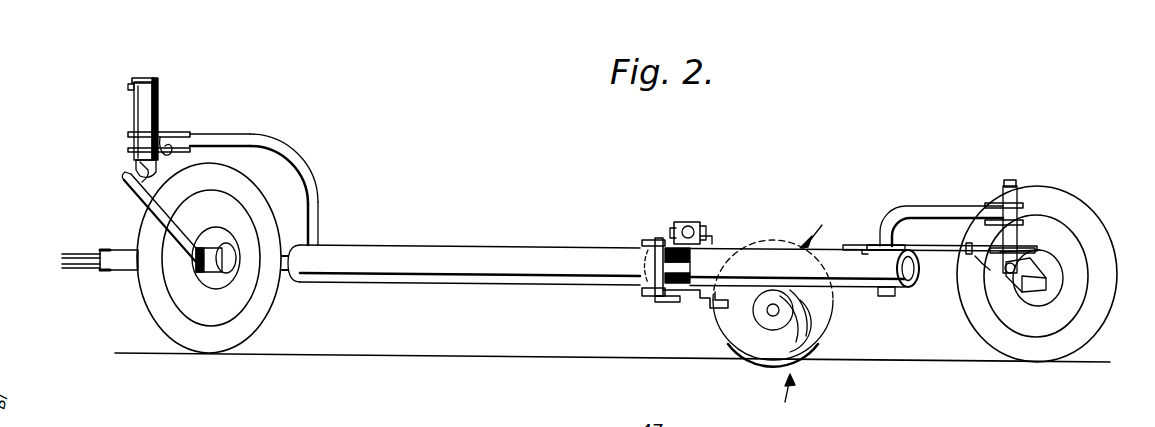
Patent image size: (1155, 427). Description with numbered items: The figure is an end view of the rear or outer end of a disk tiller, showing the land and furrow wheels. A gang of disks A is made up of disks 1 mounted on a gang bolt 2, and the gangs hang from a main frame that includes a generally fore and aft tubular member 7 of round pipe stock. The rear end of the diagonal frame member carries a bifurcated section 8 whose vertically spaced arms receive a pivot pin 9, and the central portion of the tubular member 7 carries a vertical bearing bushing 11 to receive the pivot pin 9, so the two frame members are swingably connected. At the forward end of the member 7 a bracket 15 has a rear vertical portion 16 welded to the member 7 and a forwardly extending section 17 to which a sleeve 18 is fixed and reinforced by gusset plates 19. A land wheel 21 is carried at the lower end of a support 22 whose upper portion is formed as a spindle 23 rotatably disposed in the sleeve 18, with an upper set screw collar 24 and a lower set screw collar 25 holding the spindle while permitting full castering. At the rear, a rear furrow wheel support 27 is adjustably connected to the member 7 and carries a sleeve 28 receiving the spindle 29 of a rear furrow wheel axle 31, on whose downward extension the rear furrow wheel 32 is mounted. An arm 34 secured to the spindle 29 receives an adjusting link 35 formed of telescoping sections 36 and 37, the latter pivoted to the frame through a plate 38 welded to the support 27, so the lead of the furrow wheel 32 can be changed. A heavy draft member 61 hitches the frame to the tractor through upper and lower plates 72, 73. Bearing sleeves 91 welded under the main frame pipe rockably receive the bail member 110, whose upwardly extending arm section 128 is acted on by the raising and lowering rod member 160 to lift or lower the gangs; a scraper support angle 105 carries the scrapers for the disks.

The disks 1 is at (826, 332).
The gang bolt 2 is at (768, 312).
The fore and aft tubular member 7 is at (485, 257).
The bifurcated section 8 is at (642, 240).
The pivot pin 9 is at (658, 238).
The vertical bearing bushing 11 is at (690, 269).
The bracket 15 is at (248, 135).
The rear vertical portion 16 is at (320, 214).
The forwardly extending section 17 is at (202, 134).
The sleeve 18 is at (141, 110).
The gusset plates 19 is at (166, 142).
The land wheel 21 is at (268, 313).
The support 22 is at (144, 205).
The spindle 23 is at (150, 78).
The upper set screw collar 24 is at (158, 86).
The lower set screw collar 25 is at (138, 164).
The rear furrow wheel support 27 is at (933, 210).
The sleeve 28 is at (1020, 235).
The spindle 29 is at (1010, 180).
The rear furrow wheel axle 31 is at (1000, 281).
The rear furrow wheel 32 is at (1086, 327).
The arm 34 is at (1040, 251).
The adjusting link 35 is at (949, 254).
The link section 36 is at (972, 258).
The link section 37 is at (952, 237).
The plate 38 is at (848, 245).
The draft member 61 is at (135, 278).
The upper plate 72 is at (81, 253).
The lower plate 73 is at (86, 270).
The bearing sleeves 91 is at (660, 302).
The scraper support angle 105 is at (818, 222).
The bail member 110 is at (672, 298).
The upwardly extending arm section 128 is at (708, 245).
The raising and lowering rod member 160 is at (688, 226).
The gang of disks A is at (780, 400).